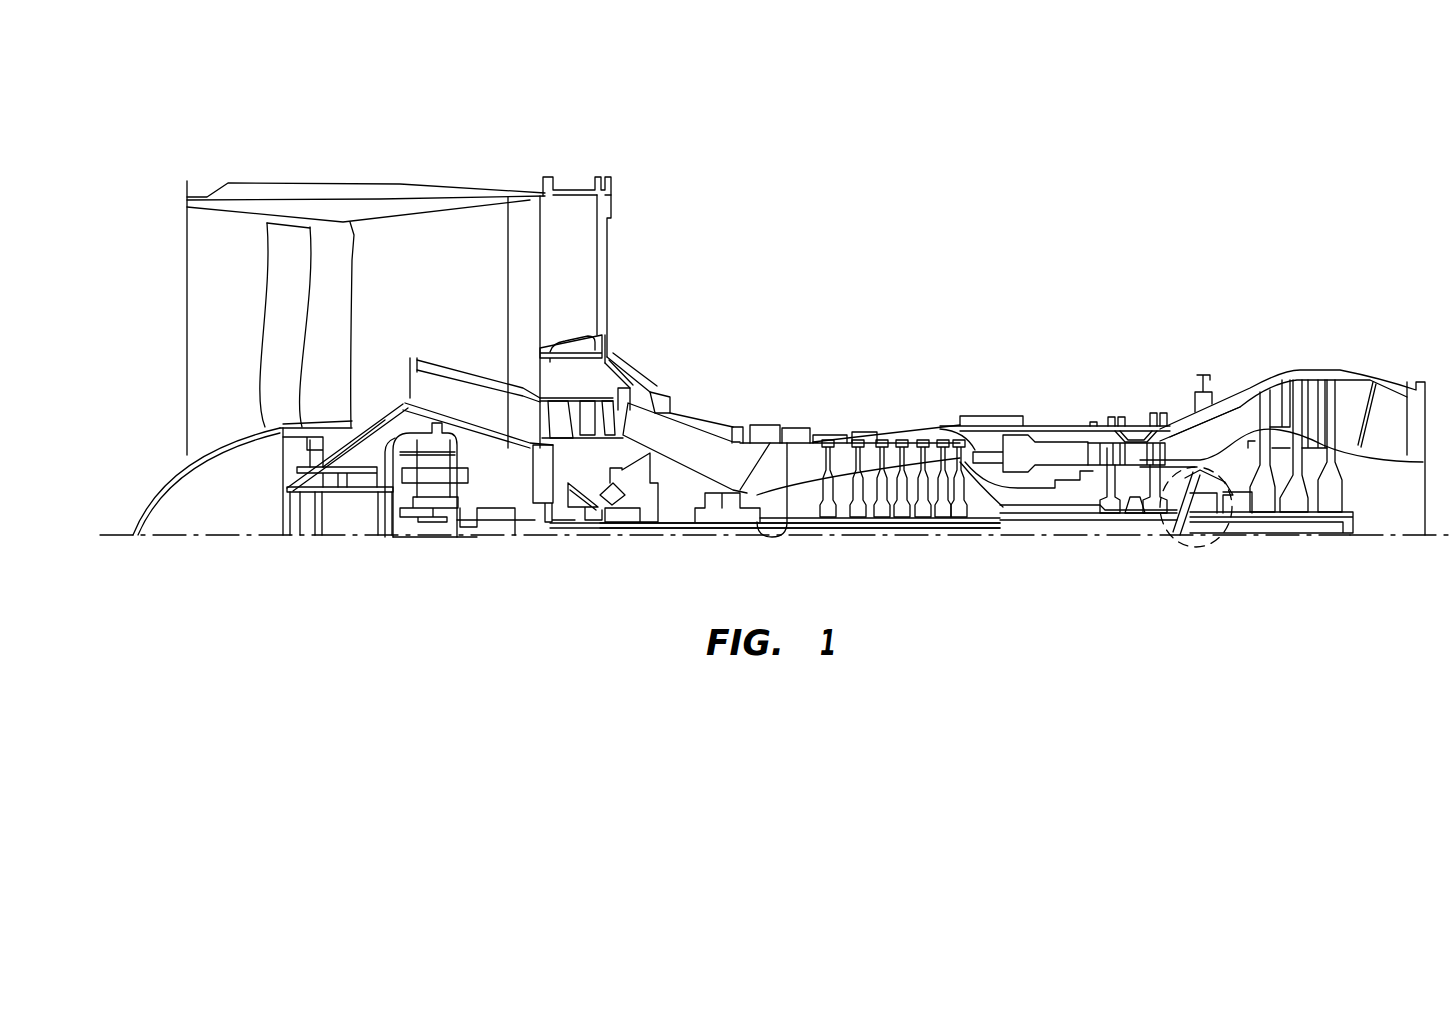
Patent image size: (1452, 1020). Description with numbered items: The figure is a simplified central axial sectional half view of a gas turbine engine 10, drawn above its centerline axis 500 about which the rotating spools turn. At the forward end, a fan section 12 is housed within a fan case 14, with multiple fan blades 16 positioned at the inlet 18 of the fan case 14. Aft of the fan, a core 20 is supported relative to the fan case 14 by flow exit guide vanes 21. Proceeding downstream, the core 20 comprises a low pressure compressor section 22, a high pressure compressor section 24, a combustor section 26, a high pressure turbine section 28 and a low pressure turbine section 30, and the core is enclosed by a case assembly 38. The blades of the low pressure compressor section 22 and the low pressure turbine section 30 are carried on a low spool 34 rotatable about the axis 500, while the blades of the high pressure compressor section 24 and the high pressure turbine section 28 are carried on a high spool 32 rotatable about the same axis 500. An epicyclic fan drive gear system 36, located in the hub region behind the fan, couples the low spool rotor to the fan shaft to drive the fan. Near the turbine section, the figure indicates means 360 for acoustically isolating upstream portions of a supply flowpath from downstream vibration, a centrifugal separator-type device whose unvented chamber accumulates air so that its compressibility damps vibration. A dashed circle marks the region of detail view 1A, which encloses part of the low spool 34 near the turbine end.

The gas turbine engine 10 is at (992, 216).
The fan section 12 is at (390, 147).
The fan case 14 is at (402, 193).
The blades 16 is at (282, 345).
The inlet 18 is at (171, 374).
The core 20 is at (924, 350).
The flow exit guide vanes 21 is at (589, 282).
The low pressure compressor (LPC) section 22 is at (599, 381).
The high pressure compressor (HPC) section 24 is at (977, 383).
The combustor section 26 is at (1090, 383).
The high pressure turbine (HPT) section 28 is at (1168, 383).
The low pressure turbine (LPT) section 30 is at (1347, 322).
The high spool 32 is at (1003, 517).
The low spool 34 is at (1203, 472).
The epicyclic fan drive gear system (FDGS) 36 is at (430, 562).
The case assembly 38 is at (1180, 405).
The means for acoustically isolating 360 is at (1224, 384).
The axis 500 is at (1451, 557).
The detail view 1A is at (1190, 548).